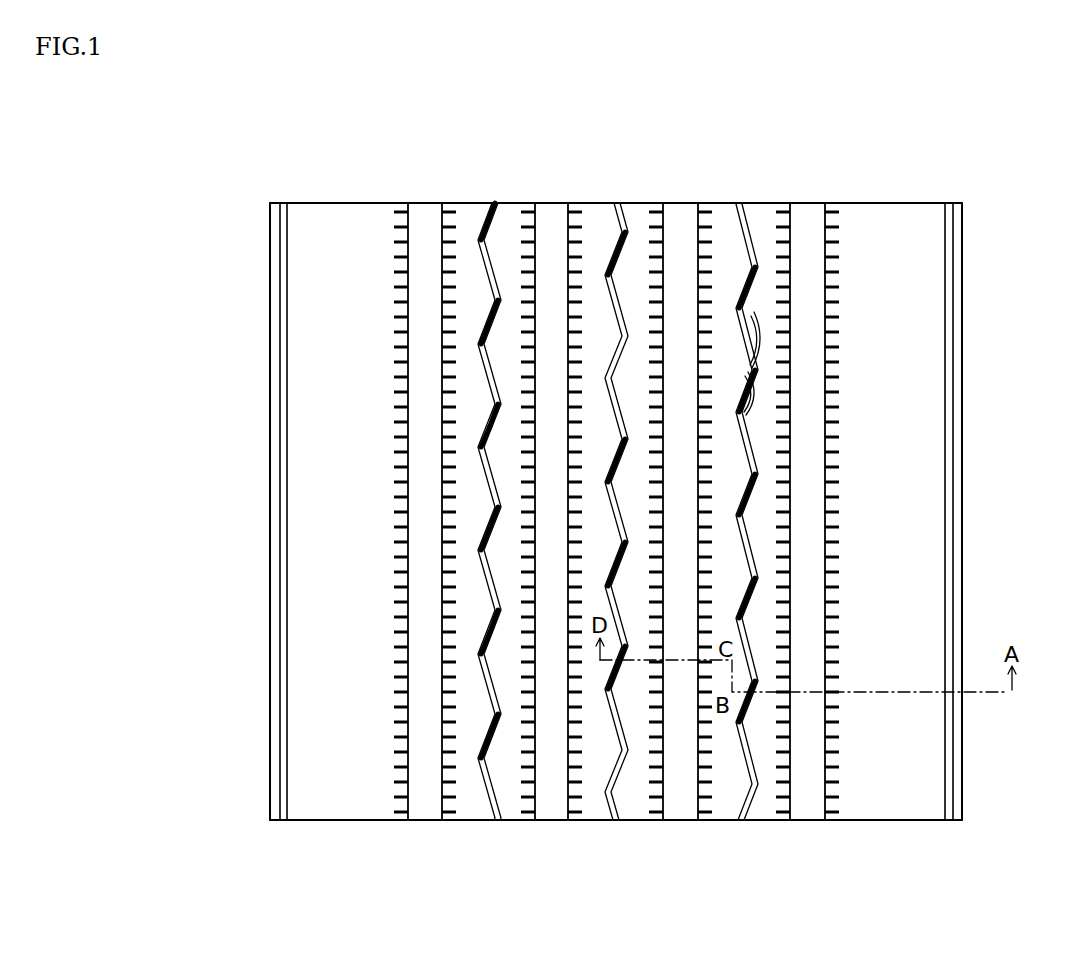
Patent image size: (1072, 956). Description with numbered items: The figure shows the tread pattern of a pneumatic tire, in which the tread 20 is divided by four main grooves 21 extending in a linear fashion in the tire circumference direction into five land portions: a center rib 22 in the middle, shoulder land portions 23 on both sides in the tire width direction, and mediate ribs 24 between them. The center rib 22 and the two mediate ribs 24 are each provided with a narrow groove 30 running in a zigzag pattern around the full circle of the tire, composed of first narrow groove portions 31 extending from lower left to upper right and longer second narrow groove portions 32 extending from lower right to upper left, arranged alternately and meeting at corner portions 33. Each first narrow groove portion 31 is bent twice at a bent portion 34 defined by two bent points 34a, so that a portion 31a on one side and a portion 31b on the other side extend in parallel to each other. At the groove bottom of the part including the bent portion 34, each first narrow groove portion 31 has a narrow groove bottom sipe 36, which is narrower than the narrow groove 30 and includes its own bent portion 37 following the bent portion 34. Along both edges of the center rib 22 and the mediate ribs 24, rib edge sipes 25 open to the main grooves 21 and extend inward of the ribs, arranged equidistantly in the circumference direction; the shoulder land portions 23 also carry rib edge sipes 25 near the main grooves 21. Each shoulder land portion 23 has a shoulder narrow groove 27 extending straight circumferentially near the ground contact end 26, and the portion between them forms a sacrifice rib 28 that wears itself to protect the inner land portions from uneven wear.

The tread 20 is at (636, 136).
The main groove 21 is at (425, 225).
The center rib 22 is at (606, 220).
The shoulder land portion 23 is at (343, 220).
The mediate rib 24 is at (481, 205).
The rib edge sipe 25 is at (442, 298).
The ground contact end 26 is at (270, 715).
The shoulder narrow groove 27 is at (283, 755).
The sacrifice rib 28 is at (276, 790).
The narrow groove 30 is at (490, 280).
The first narrow groove portion 31 is at (760, 397).
The portion on one side of the bent portion 31a is at (753, 482).
The portion on the other side of the bent portion 31b is at (740, 512).
The second narrow groove portion 32 is at (495, 583).
The corner portion 33 is at (495, 713).
The bent portion 34 is at (490, 433).
The bent point 34a is at (613, 457).
The narrow groove bottom sipe 36 is at (490, 640).
The bent portion 37 is at (490, 428).